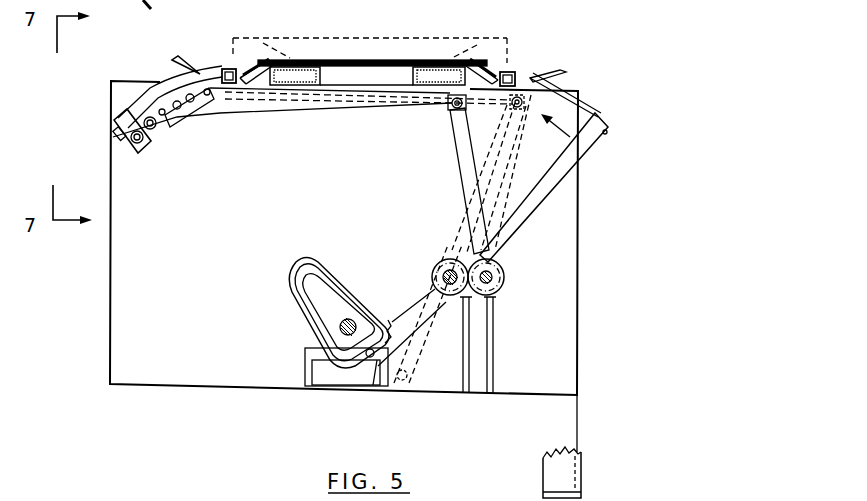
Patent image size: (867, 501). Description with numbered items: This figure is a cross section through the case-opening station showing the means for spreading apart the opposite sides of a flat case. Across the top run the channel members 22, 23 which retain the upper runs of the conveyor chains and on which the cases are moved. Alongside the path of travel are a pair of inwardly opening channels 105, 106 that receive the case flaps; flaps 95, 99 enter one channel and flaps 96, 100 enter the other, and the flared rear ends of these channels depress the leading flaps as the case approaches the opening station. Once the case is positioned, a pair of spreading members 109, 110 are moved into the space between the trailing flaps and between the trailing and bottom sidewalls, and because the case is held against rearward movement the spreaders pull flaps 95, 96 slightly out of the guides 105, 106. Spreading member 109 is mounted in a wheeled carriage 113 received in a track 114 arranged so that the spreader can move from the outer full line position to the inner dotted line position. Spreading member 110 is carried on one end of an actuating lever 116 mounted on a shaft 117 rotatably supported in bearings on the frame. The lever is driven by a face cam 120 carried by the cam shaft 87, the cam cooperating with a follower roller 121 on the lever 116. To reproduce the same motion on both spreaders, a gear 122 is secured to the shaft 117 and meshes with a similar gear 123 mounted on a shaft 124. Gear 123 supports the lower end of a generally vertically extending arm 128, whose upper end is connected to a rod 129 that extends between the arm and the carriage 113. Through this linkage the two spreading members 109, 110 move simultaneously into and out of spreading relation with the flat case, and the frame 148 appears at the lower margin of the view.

The channel member 22 is at (330, 78).
The channel member 23 is at (411, 78).
The cam shaft 87 is at (348, 320).
The flap 95 is at (247, 70).
The flap 96 is at (480, 80).
The flap 99 is at (258, 64).
The flap 100 is at (486, 80).
The inwardly opening channel 105 is at (222, 70).
The inwardly opening channel 106 is at (515, 72).
The spreading member 109 is at (181, 58).
The spreading member 110 is at (575, 68).
The wheeled carriage 113 is at (157, 138).
The track 114 is at (133, 156).
The actuating lever 116 is at (527, 217).
The shaft 117 is at (443, 273).
The face cam 120 is at (353, 286).
The follower roller 121 is at (379, 360).
The gear 122 is at (432, 258).
The gear 123 is at (505, 268).
The shaft 124 is at (490, 280).
The arm 128 is at (463, 181).
The rod 129 is at (338, 107).
The frame 148 is at (207, 494).